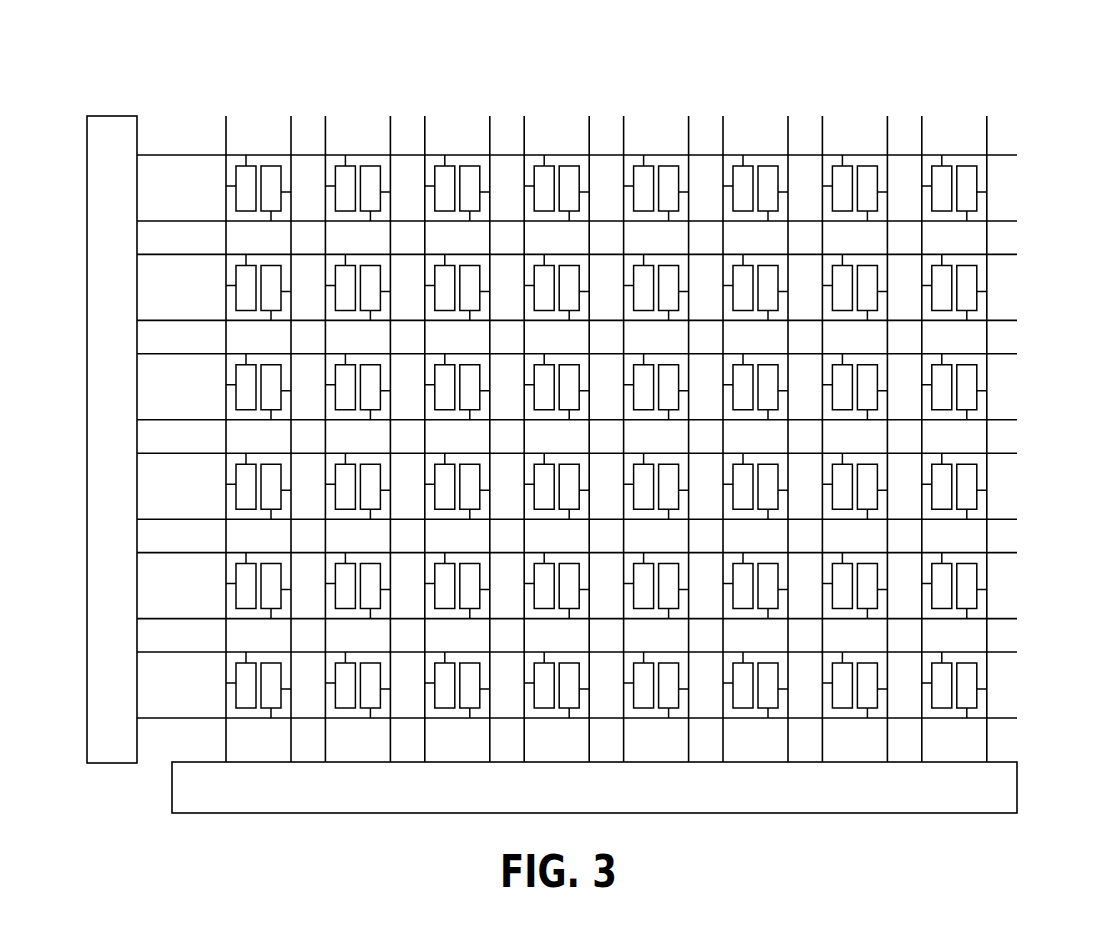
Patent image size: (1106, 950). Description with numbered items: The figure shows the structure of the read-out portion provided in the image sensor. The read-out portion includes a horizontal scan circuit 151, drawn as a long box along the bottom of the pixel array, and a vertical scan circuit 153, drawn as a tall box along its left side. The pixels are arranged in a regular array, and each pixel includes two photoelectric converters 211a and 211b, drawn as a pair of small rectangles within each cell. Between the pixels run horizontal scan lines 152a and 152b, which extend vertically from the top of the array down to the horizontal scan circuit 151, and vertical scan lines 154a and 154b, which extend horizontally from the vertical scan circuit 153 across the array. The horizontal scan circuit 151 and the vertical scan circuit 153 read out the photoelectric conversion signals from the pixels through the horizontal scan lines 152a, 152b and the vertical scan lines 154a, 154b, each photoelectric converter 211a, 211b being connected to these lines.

The horizontal scan circuit 151 is at (1005, 793).
The vertical scan circuit 153 is at (97, 116).
The horizontal scan line 152a is at (293, 126).
The horizontal scan line 152b is at (226, 128).
The vertical scan line 154a is at (1037, 197).
The vertical scan line 154b is at (1037, 131).
The photoelectric converter 211a is at (272, 154).
The photoelectric converter 211b is at (240, 154).